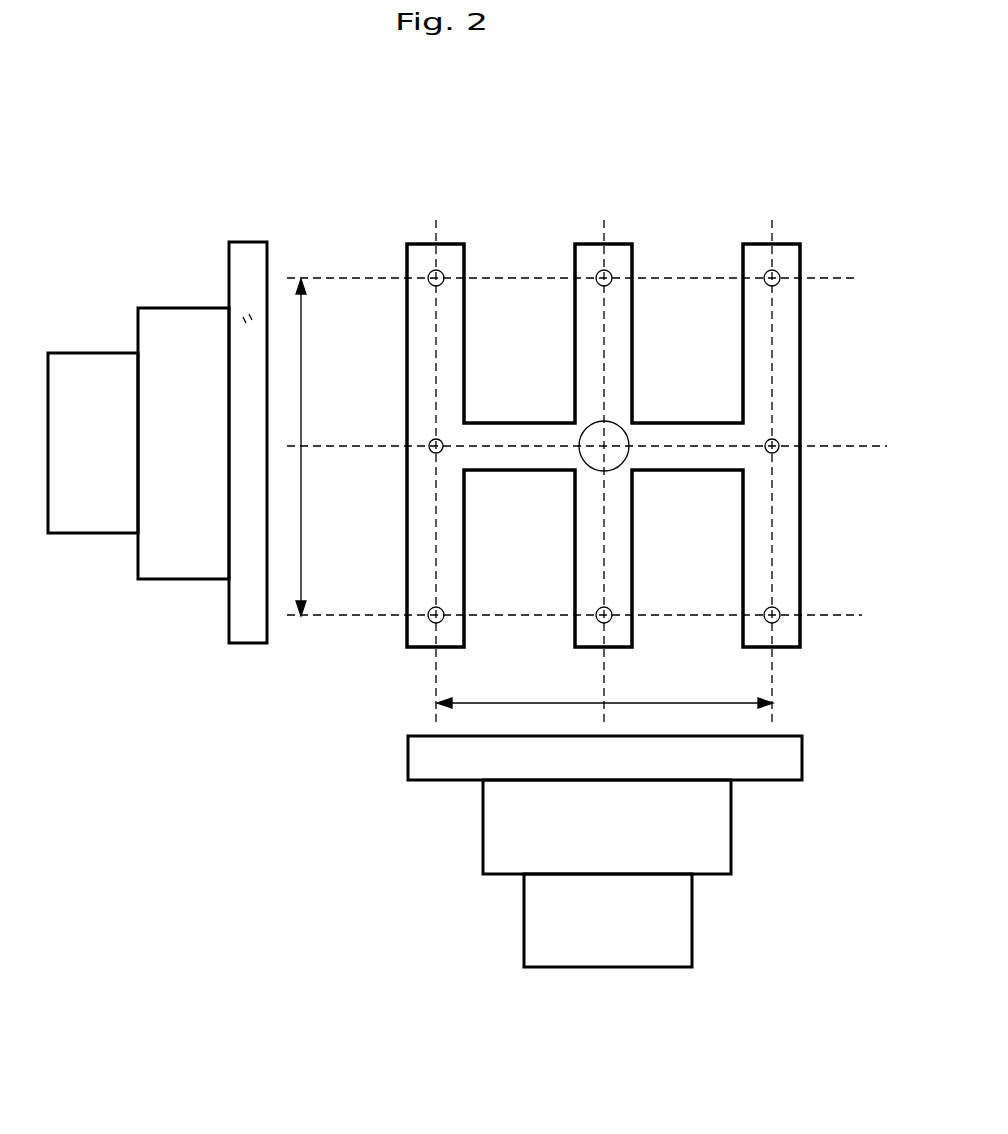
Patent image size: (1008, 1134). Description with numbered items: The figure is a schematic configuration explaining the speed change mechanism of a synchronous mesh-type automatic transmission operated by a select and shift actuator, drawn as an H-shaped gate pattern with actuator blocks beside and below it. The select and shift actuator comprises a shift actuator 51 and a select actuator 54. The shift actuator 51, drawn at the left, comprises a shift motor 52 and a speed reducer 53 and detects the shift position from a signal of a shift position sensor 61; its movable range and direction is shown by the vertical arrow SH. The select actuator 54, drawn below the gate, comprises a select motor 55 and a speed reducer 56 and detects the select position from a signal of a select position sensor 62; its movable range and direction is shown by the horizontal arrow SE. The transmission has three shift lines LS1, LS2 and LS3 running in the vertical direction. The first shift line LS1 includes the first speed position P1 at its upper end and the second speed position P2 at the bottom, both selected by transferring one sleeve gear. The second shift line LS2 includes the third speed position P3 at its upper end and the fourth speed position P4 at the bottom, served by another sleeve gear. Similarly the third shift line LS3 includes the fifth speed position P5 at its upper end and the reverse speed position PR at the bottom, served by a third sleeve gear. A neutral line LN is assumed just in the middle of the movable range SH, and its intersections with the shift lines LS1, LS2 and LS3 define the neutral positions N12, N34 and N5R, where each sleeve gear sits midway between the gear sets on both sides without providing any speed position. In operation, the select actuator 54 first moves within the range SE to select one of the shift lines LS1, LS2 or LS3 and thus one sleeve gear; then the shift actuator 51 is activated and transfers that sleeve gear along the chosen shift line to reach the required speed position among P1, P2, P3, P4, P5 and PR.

The shift actuator 51 is at (138, 297).
The shift motor 52 is at (110, 537).
The speed reducer 53 is at (192, 582).
The shift position sensor 61 is at (220, 263).
The select actuator 54 is at (482, 912).
The select motor 55 is at (693, 945).
The speed reducer 56 is at (481, 838).
The select position sensor 62 is at (407, 757).
The first shift line LS1 is at (437, 222).
The second shift line LS2 is at (604, 222).
The third shift line LS3 is at (772, 222).
The neutral line LN is at (848, 450).
The arrow SH is at (315, 447).
The arrow SE is at (605, 694).
The 1st speed position P1 is at (427, 288).
The 2nd speed position P2 is at (427, 615).
The 3rd speed position P3 is at (594, 285).
The 4th speed position P4 is at (597, 613).
The 5th speed position P5 is at (765, 285).
The reverse speed position PR is at (763, 615).
The neutral position N12 is at (428, 450).
The neutral position N34 is at (596, 472).
The neutral position N5R is at (768, 457).